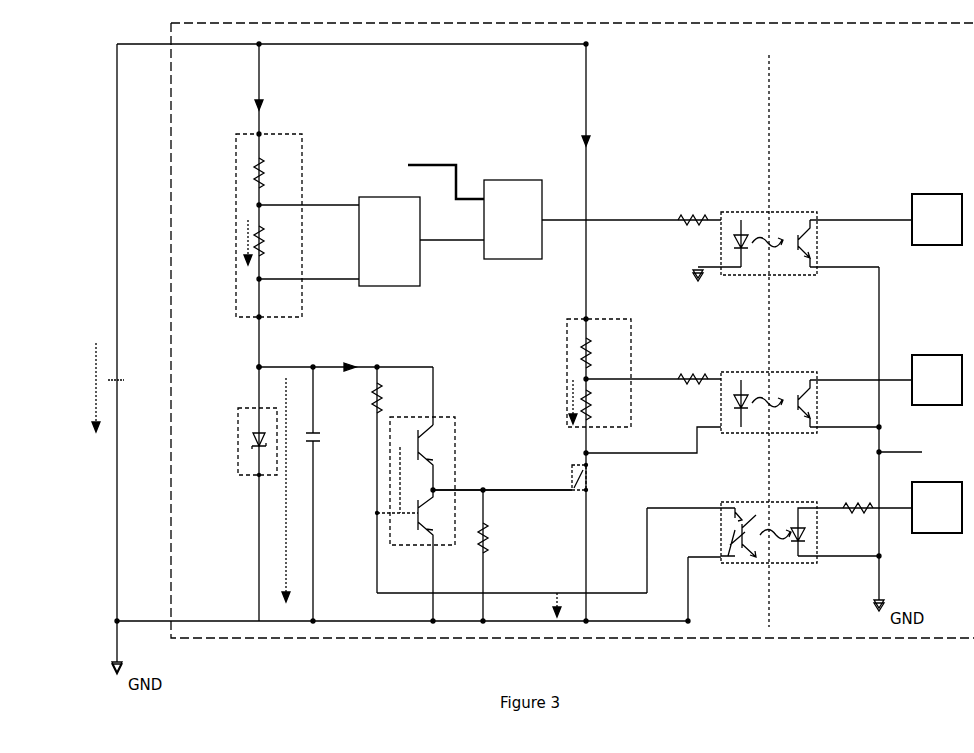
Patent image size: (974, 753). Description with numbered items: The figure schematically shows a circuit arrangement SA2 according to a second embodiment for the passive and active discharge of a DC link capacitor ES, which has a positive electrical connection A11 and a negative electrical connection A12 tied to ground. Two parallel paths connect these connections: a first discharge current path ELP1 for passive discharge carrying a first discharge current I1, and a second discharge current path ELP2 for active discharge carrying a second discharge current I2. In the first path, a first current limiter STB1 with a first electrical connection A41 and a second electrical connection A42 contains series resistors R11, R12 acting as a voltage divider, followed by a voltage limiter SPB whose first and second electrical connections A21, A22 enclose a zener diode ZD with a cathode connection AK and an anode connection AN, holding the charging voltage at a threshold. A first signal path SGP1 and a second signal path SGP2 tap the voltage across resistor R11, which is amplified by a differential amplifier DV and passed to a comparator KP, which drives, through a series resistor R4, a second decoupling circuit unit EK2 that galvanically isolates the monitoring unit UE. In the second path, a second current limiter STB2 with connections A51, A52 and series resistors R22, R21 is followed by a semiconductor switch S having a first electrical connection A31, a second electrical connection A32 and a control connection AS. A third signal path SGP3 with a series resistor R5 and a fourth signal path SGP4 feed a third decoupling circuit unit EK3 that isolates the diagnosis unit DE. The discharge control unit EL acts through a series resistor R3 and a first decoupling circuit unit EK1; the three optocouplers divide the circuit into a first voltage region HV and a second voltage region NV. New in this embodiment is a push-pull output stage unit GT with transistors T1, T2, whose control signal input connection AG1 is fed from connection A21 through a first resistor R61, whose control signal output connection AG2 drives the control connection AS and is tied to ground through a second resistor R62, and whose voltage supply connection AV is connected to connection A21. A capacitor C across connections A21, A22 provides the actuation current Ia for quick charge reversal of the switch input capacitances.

The circuit arrangement SA2 is at (290, 641).
The first discharge current path ELP1 is at (262, 55).
The second discharge current path ELP2 is at (590, 53).
The first discharge current I1 is at (266, 94).
The second discharge current I2 is at (594, 131).
The first electrical connection of first current limiter A41 is at (275, 125).
The second electrical connection of first current limiter A42 is at (275, 326).
The first current limiter STB1 is at (301, 160).
The second resistor of first current limiter R12 is at (275, 173).
The first resistor of first current limiter R11 is at (275, 241).
The first signal path SGP1 is at (308, 195).
The second signal path SGP2 is at (308, 270).
The differential amplifier DV is at (389, 241).
The comparator KP is at (570, 219).
The actuation current Ia is at (344, 377).
The DC link capacitor ES is at (132, 385).
The positive electrical connection A11 is at (136, 367).
The negative electrical connection A12 is at (136, 405).
The first electrical connection of voltage limiter A21 is at (252, 410).
The second electrical connection of voltage limiter A22 is at (240, 488).
The voltage limiter SPB is at (240, 476).
The zener diode ZD is at (250, 443).
The cathode connection AK is at (255, 435).
The anode connection AN is at (254, 450).
The capacitor C is at (319, 495).
The first resistor R61 is at (362, 480).
The push-pull output stage unit GT is at (457, 440).
The voltage supply connection AV is at (445, 396).
The transistor 1 T1 is at (430, 457).
The transistor 2 T2 is at (430, 556).
The control signal input connection AG1 is at (379, 517).
The control signal output connection AG2 is at (501, 481).
The second resistor R62 is at (500, 556).
The second current limiter STB2 is at (630, 345).
The first electrical connection of second current limiter A51 is at (602, 311).
The second electrical connection of second current limiter A52 is at (602, 443).
The second resistor of second current limiter R22 is at (603, 353).
The first resistor of second current limiter R21 is at (603, 405).
The third signal path SGP3 is at (652, 373).
The fourth signal path SGP4 is at (653, 440).
The series resistor R5 is at (693, 368).
The control connection AS is at (509, 478).
The first electrical connection of semiconductor switch A31 is at (602, 465).
The semiconductor switch S is at (595, 485).
The second electrical connection of semiconductor switch A32 is at (602, 502).
The first voltage region HV is at (748, 341).
The second voltage region NV is at (799, 75).
The series resistor R4 is at (693, 210).
The second decoupling circuit unit EK2 is at (802, 259).
The monitoring unit UE is at (937, 219).
The third decoupling circuit unit EK3 is at (816, 418).
The diagnosis unit DE is at (937, 380).
The first decoupling circuit unit EK1 is at (816, 548).
The series resistor R3 is at (857, 498).
The discharge control unit EL is at (937, 507).